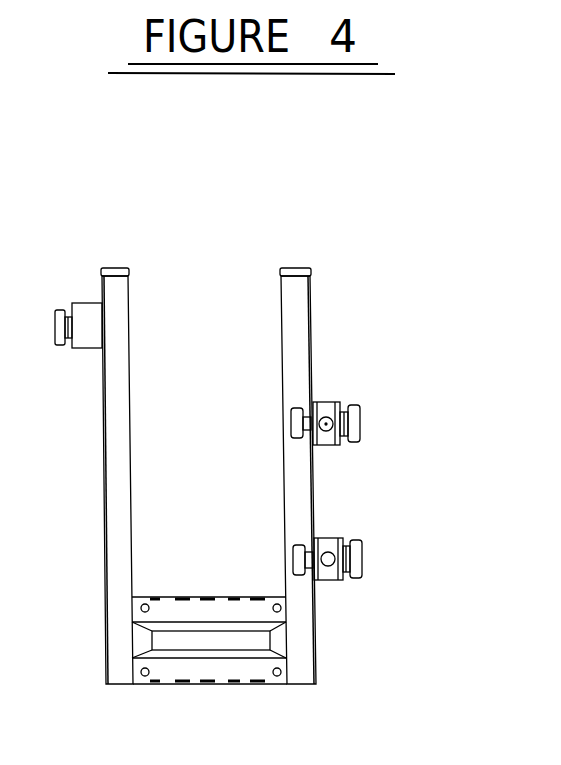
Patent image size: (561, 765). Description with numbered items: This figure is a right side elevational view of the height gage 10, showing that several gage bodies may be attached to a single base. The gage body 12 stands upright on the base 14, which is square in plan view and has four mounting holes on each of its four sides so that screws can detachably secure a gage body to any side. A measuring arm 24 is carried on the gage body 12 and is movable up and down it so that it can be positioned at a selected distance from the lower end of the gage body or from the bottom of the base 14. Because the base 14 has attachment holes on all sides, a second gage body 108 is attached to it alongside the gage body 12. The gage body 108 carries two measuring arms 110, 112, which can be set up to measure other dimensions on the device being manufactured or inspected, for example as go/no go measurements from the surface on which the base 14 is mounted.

The height gage 10 is at (520, 133).
The gage body 12 is at (70, 476).
The base 14 is at (209, 677).
The measuring arm 24 is at (51, 295).
The gage body 108 is at (365, 465).
The measuring arm 110 is at (373, 388).
The measuring arm 112 is at (375, 526).